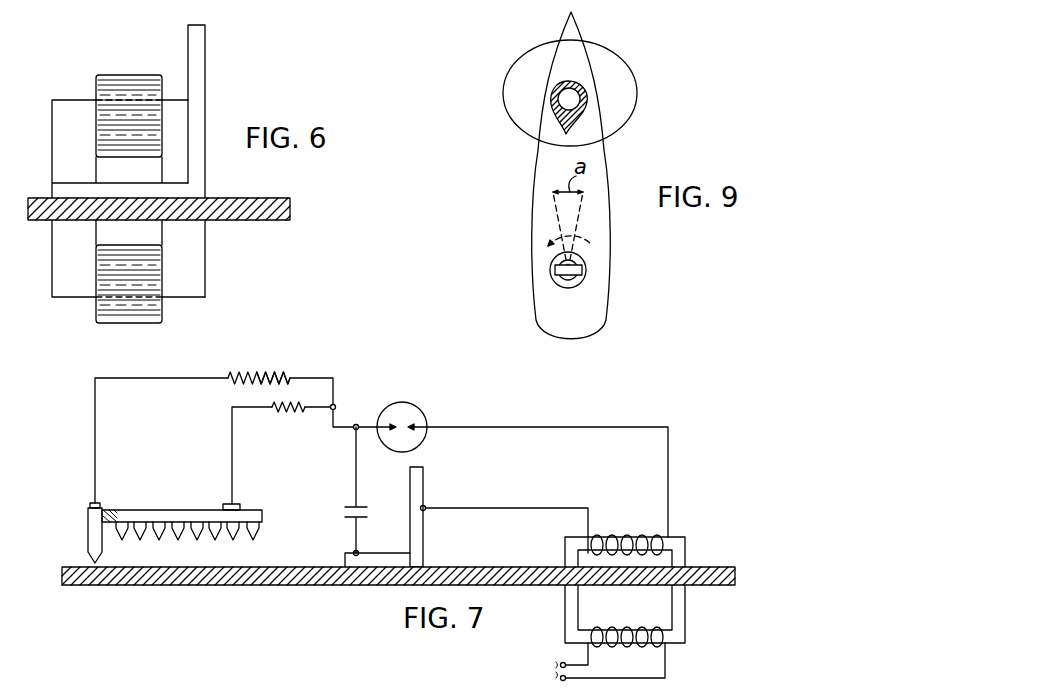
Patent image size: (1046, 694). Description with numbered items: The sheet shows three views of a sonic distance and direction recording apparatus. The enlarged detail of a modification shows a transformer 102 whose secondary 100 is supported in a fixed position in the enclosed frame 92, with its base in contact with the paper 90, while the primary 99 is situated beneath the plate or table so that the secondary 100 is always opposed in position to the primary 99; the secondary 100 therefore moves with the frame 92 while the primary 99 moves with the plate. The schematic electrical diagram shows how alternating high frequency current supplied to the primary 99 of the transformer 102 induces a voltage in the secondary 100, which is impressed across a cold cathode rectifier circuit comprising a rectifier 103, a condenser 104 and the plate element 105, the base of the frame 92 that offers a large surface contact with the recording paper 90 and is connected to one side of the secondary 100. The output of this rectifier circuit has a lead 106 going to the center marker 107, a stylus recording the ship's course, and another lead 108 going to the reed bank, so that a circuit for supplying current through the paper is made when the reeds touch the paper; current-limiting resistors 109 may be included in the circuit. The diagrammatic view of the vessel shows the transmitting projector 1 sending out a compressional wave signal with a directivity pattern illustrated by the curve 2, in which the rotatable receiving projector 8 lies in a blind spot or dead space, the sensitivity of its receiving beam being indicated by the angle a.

In FIG. 9, the transmitting projector 1 is at (585, 108).
In FIG. 9, the directivity pattern 2 is at (618, 58).
In FIG. 9, the receiving projector 8 is at (555, 268).
In FIG. 6, the paper 90 is at (248, 200).
In FIG. 6, the frame 92 is at (205, 96).
In FIG. 7, the frame 92 is at (418, 494).
In FIG. 6, the primary 99 is at (140, 262).
In FIG. 7, the primary 99 is at (570, 633).
In FIG. 6, the secondary 100 is at (102, 90).
In FIG. 7, the secondary 100 is at (673, 546).
In FIG. 6, the transformer 102 is at (140, 230).
In FIG. 7, the transformer 102 is at (603, 600).
In FIG. 7, the rectifier 103 is at (405, 418).
In FIG. 7, the condenser 104 is at (365, 519).
In FIG. 7, the plate element 105 is at (377, 560).
In FIG. 7, the lead 106 is at (232, 377).
In FIG. 7, the center marker 107 is at (93, 548).
In FIG. 7, the lead 108 is at (257, 408).
In FIG. 7, the current-limiting resistors 109 is at (271, 375).